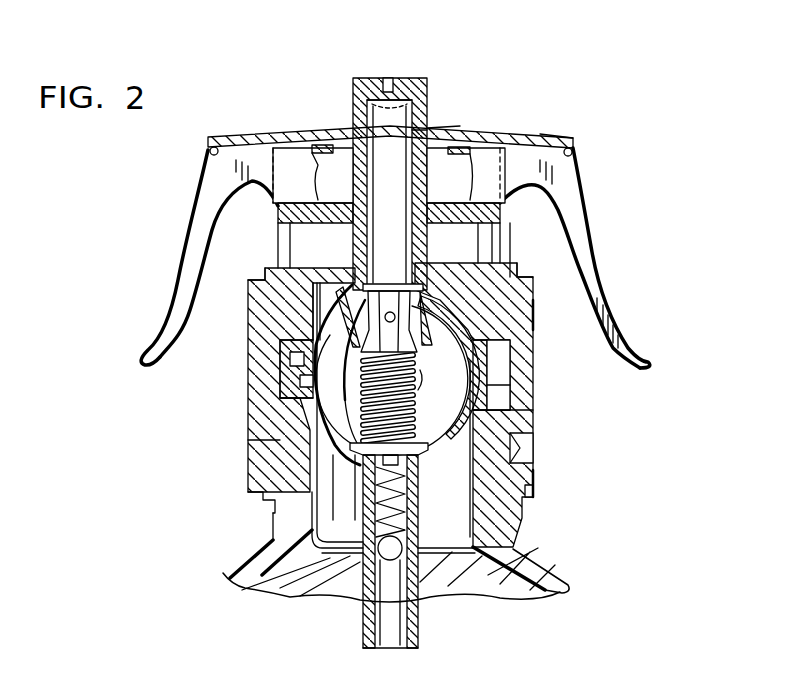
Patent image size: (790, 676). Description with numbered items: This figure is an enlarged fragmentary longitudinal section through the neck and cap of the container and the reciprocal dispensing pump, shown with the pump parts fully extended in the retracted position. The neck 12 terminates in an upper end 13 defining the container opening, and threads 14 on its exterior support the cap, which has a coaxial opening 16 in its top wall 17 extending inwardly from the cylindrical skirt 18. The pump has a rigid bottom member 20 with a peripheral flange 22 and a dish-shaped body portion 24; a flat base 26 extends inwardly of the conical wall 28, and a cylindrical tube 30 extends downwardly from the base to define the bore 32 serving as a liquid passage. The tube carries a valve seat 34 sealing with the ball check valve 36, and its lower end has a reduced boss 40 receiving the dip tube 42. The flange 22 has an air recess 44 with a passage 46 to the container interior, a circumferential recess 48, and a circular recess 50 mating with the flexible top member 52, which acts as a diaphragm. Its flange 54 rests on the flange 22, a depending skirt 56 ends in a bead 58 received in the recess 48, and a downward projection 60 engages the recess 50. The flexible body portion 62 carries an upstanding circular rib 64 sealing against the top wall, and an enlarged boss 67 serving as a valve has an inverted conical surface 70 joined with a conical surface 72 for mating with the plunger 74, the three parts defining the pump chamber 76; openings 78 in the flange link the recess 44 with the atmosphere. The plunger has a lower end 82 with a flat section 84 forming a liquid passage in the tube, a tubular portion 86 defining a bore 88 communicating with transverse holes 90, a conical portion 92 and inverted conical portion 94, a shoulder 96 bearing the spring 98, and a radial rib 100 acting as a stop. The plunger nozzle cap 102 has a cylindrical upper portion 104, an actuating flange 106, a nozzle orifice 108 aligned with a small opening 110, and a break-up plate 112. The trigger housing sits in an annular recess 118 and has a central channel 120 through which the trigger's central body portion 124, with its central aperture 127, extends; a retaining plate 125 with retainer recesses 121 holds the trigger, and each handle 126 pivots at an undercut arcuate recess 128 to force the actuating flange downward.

The neck 12 is at (510, 480).
The upper end 13 is at (277, 397).
The threads 14 is at (513, 447).
The coaxial opening 16 is at (423, 263).
The top wall 17 is at (535, 290).
The skirt 18 is at (533, 322).
The bottom member 20 is at (572, 458).
The peripheral flange 22 is at (533, 375).
The dish-shaped body portion 24 is at (305, 460).
The flat base 26 is at (425, 455).
The conical wall 28 is at (310, 492).
The tube 30 is at (404, 556).
The bore 32 is at (310, 525).
The valve seat 34 is at (418, 512).
The ball check valve 36 is at (365, 525).
The reduced boss 40 is at (362, 630).
The dip tube 42 is at (420, 628).
The recess 44 is at (267, 365).
The passage 46 is at (280, 408).
The circumferential recess 48 is at (513, 430).
The circular recess 50 is at (470, 362).
The flexible top member 52 is at (533, 340).
The flange 54 is at (533, 352).
The depending skirt 56 is at (533, 395).
The bead 58 is at (533, 415).
The downward projection 60 is at (363, 390).
The flexible body portion 62 is at (318, 333).
The upstanding circular rib 64 is at (257, 293).
The enlarged boss 67 is at (248, 325).
The inverted conical surface 70 is at (443, 302).
The conical surface 72 is at (422, 335).
The plunger 74 is at (456, 127).
The pump chamber 76 is at (310, 422).
The openings 78 is at (277, 347).
The lower end 82 is at (250, 440).
The flat section 84 is at (414, 410).
The tubular portion 86 is at (427, 128).
The bore 88 is at (387, 128).
The transverse holes 90 is at (389, 296).
The conical portion 92 is at (321, 368).
The inverted conical portion 94 is at (315, 322).
The shoulder 96 is at (416, 382).
The spring 98 is at (428, 442).
The radial rib 100 is at (360, 258).
The plunger nozzle cap 102 is at (430, 101).
The cylindrical upper portion 104 is at (423, 193).
The actuating flange 106 is at (503, 203).
The nozzle orifice 108 is at (390, 78).
The small opening 110 is at (350, 100).
The break-up plate 112 is at (376, 78).
The annular recess 118 is at (552, 256).
The central channel 120 is at (274, 236).
The retainer recesses 121 is at (230, 122).
The central body portion 124 is at (500, 127).
The retaining plate 125 is at (545, 132).
The handle 126 is at (215, 183).
The central aperture 127 is at (342, 153).
The undercut arcuate recess 128 is at (250, 192).